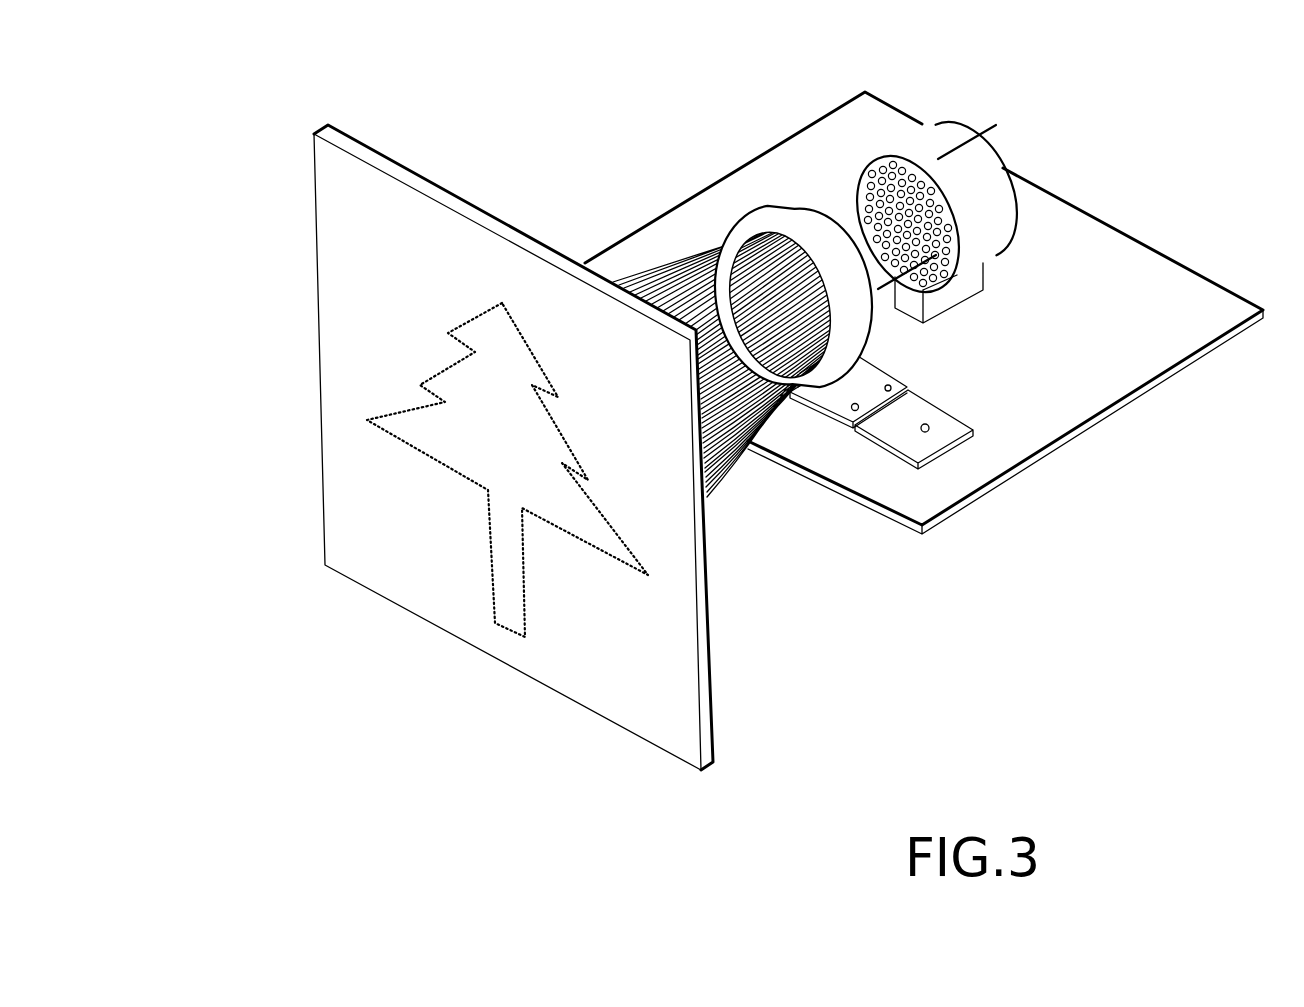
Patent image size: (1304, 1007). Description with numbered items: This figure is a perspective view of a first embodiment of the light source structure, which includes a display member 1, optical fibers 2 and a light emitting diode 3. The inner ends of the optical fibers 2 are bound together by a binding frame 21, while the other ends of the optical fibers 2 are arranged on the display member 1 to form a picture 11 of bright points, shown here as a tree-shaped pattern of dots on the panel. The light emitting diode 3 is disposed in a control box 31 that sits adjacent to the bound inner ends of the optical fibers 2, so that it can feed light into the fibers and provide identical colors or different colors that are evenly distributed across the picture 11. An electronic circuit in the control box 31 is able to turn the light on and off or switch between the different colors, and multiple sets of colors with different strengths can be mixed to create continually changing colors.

The display member 1 is at (662, 672).
The picture of bright points 11 is at (456, 330).
The optical fibers 2 is at (708, 287).
The binding frame 21 is at (795, 237).
The light emitting diode 3 is at (898, 204).
The control box 31 is at (970, 172).